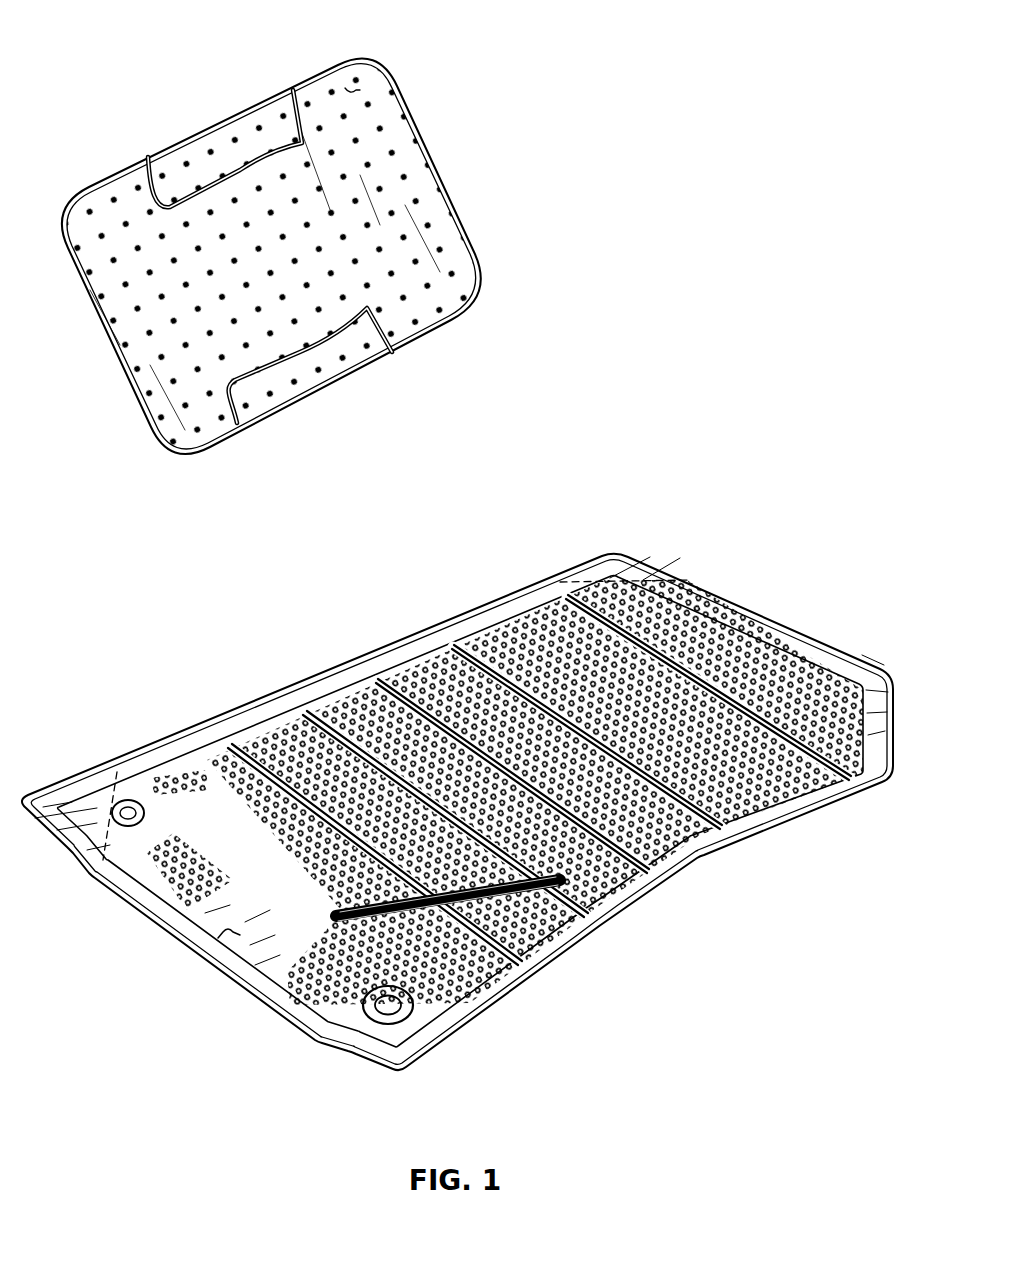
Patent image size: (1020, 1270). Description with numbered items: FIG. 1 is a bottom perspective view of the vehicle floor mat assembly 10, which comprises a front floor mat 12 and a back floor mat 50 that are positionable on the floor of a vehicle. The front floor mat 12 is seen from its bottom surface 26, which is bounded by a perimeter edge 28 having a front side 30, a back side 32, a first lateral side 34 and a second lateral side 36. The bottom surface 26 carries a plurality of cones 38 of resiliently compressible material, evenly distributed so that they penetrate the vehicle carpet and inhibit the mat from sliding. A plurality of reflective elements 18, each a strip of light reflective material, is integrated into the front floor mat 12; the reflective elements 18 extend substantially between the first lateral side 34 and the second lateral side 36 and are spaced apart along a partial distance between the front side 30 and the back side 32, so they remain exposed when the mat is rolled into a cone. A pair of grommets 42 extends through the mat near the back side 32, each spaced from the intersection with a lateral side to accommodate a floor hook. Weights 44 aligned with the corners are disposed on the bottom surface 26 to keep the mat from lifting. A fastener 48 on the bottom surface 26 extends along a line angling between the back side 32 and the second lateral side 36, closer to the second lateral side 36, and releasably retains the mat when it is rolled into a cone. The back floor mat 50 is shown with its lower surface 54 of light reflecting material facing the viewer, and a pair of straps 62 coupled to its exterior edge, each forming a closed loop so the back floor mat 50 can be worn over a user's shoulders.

The vehicle floor mat assembly 10 is at (797, 383).
The front floor mat 12 is at (783, 546).
The reflective elements 18 is at (583, 597).
The bottom surface 26 is at (228, 940).
The perimeter edge 28 is at (909, 746).
The front side 30 is at (832, 634).
The back side 32 is at (170, 948).
The first lateral side 34 is at (300, 676).
The second lateral side 36 is at (682, 878).
The cones 38 is at (740, 640).
The grommets 42 is at (134, 808).
The weights 44 is at (628, 562).
The fastener 48 is at (556, 905).
The back floor mat 50 is at (424, 82).
The lower surface 54 is at (352, 86).
The straps 62 is at (152, 162).